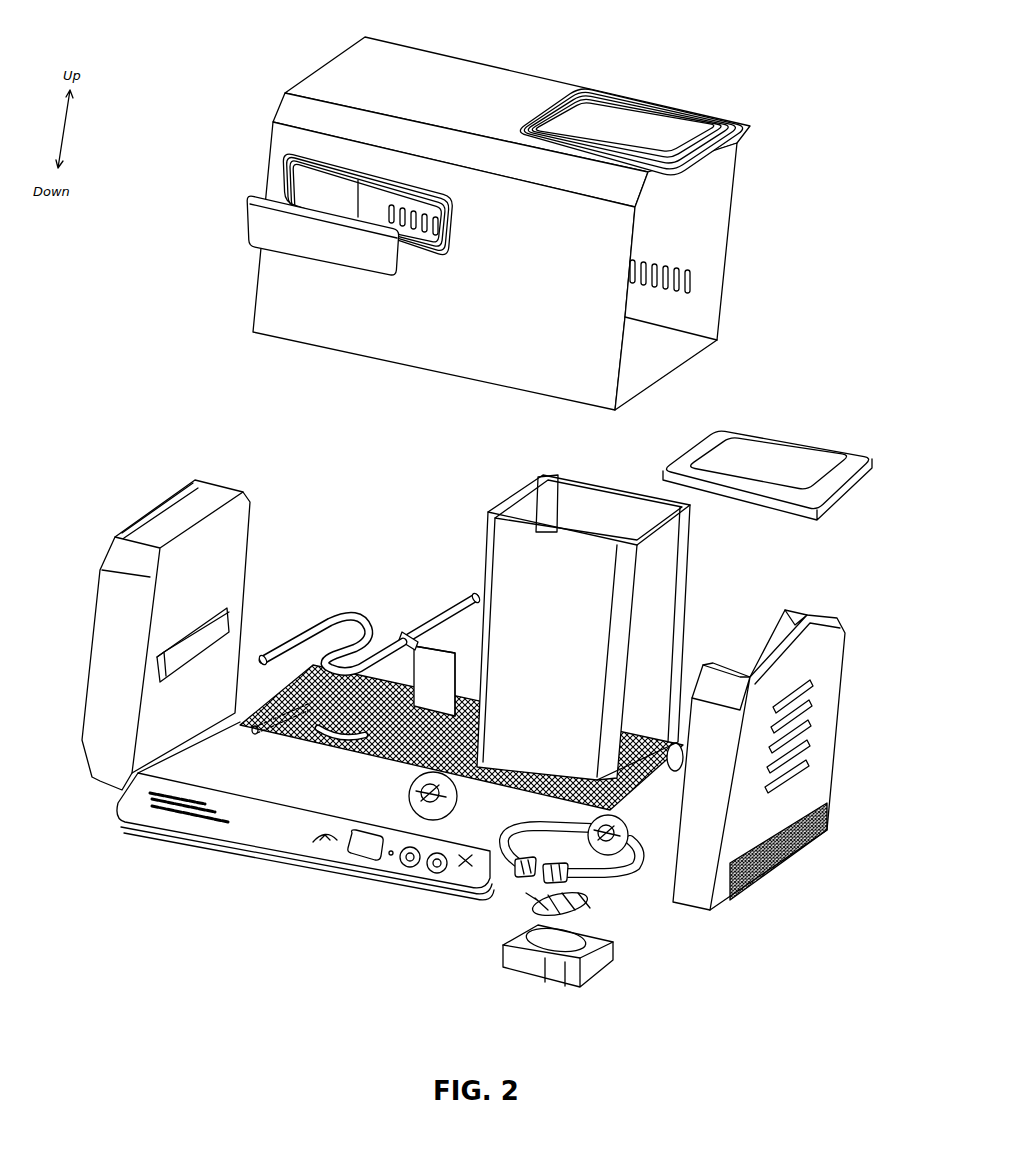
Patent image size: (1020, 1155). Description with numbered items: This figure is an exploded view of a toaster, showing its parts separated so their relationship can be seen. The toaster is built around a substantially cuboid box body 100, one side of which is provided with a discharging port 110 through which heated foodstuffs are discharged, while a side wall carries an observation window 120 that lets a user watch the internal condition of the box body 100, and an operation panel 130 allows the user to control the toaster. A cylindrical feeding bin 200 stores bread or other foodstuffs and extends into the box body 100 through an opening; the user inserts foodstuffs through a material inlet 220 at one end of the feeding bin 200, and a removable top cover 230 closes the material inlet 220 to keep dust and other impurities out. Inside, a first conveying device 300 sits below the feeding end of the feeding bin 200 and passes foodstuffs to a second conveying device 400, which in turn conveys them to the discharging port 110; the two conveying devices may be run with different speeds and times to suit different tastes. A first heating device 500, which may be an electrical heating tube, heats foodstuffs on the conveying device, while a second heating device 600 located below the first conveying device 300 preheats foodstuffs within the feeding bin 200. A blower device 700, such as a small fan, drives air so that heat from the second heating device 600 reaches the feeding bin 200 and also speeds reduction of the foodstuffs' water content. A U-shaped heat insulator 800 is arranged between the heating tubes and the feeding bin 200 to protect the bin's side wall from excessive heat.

The box body 100 is at (465, 75).
The discharging port 110 is at (227, 607).
The observation window 120 is at (245, 220).
The operation panel 130 is at (275, 833).
The feeding bin 200 is at (490, 558).
The material inlet 220 is at (527, 500).
The top cover 230 is at (793, 460).
The first conveying device 300 is at (512, 798).
The second conveying device 400 is at (347, 763).
The first heating device 500 is at (343, 617).
The second heating device 600 is at (620, 875).
The blower device 700 is at (525, 905).
The heat insulator 800 is at (457, 603).